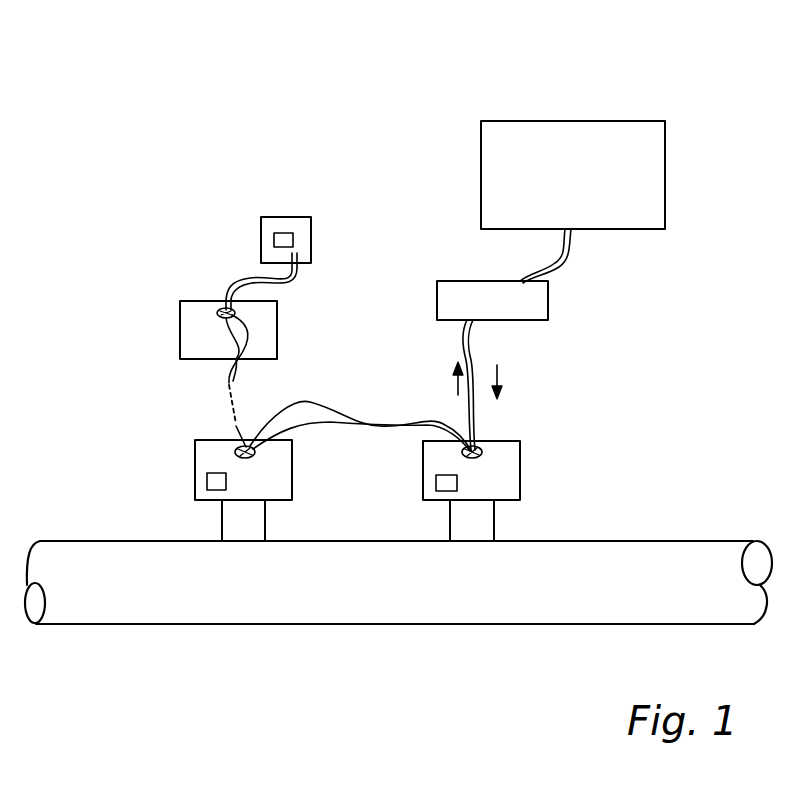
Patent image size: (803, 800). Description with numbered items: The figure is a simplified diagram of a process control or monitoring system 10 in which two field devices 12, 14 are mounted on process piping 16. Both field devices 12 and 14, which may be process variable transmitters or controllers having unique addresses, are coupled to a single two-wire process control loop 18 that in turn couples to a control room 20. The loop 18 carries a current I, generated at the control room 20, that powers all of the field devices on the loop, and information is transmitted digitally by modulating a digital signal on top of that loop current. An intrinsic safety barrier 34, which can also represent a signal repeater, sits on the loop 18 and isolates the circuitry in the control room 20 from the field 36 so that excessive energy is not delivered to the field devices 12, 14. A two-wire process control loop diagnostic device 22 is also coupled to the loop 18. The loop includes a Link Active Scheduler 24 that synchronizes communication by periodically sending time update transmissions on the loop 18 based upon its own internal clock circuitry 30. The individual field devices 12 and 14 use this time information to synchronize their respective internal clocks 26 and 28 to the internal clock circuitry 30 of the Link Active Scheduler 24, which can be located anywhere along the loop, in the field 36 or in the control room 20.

The process control or monitoring system 10 is at (203, 112).
The field device 12 is at (473, 491).
The field device 14 is at (311, 471).
The process piping 16 is at (606, 540).
The two-wire process control loop 18 is at (568, 250).
The control room 20 is at (577, 121).
The two-wire process control loop diagnostic device 22 is at (193, 302).
The Link Active Scheduler 24 is at (296, 240).
The internal clock 26 is at (436, 478).
The internal clock 28 is at (207, 482).
The internal clock circuitry 30 is at (293, 240).
The intrinsic safety barrier 34 is at (533, 320).
The field 36 is at (397, 264).